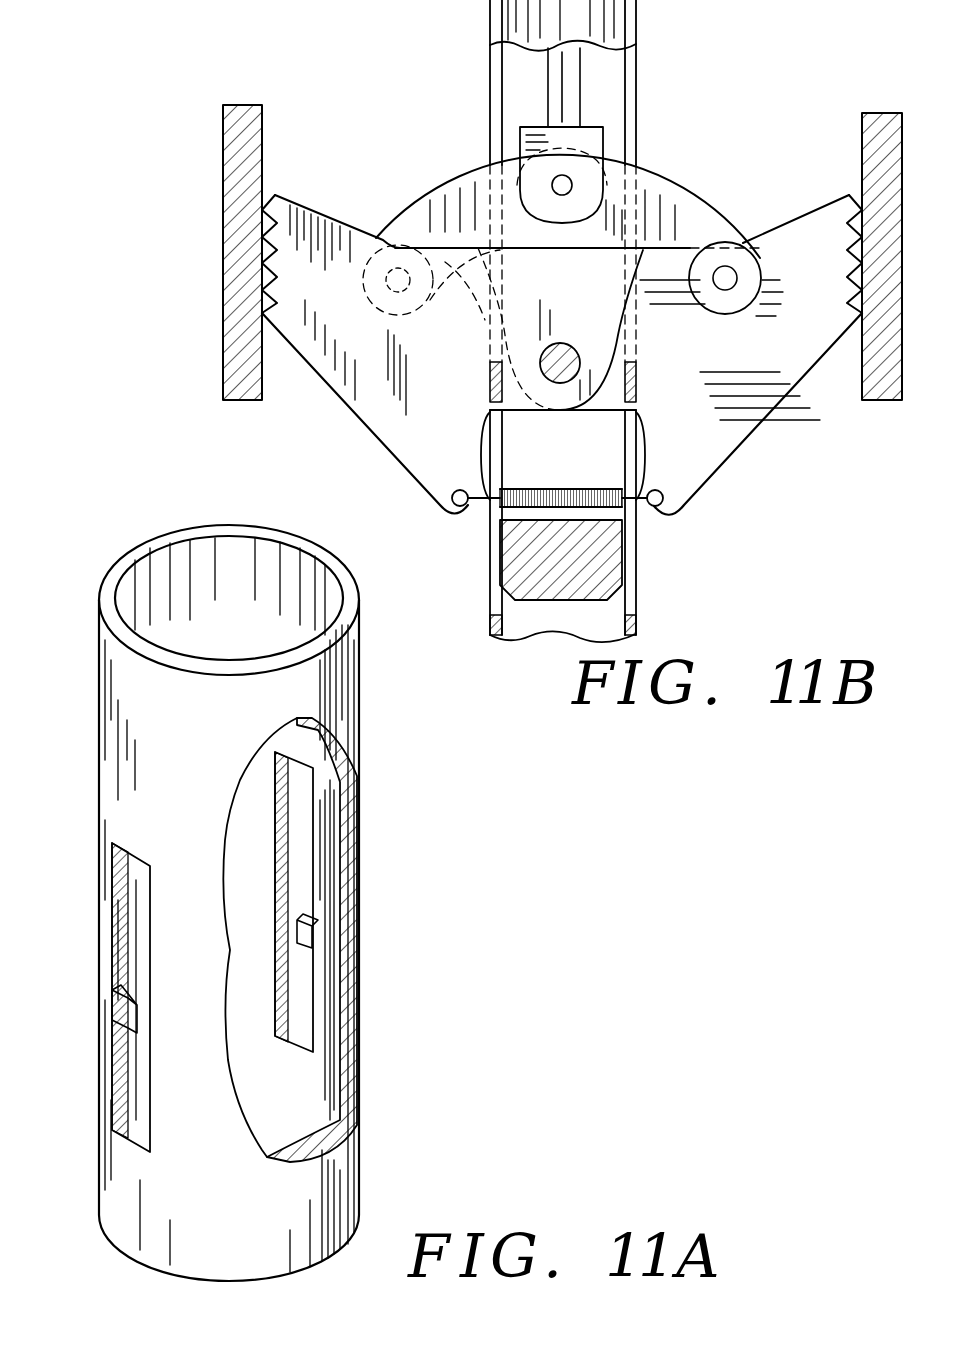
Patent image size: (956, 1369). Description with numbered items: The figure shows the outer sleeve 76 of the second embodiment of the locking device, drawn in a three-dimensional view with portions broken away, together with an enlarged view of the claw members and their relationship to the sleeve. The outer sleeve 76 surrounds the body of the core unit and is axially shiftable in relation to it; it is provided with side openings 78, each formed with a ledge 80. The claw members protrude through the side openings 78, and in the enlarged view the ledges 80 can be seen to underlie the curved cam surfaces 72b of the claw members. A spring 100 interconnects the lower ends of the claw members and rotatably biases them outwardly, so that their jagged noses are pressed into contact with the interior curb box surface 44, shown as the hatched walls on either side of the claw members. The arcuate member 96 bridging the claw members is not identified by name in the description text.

In FIG. 11B, the vessel wall 44 is at (862, 138).
In FIG. 11B, the tube 76 is at (636, 80).
In FIG. 11A, the tube 76 is at (325, 684).
In FIG. 11B, the slot 78 is at (490, 547).
In FIG. 11A, the slot 78 is at (300, 823).
In FIG. 11B, the tab 80 is at (492, 356).
In FIG. 11A, the tab 80 is at (312, 918).
In FIG. 11B, the arm 96 is at (458, 188).
In FIG. 11B, the plate 72b is at (445, 278).
In FIG. 11B, the spring 100 is at (560, 488).